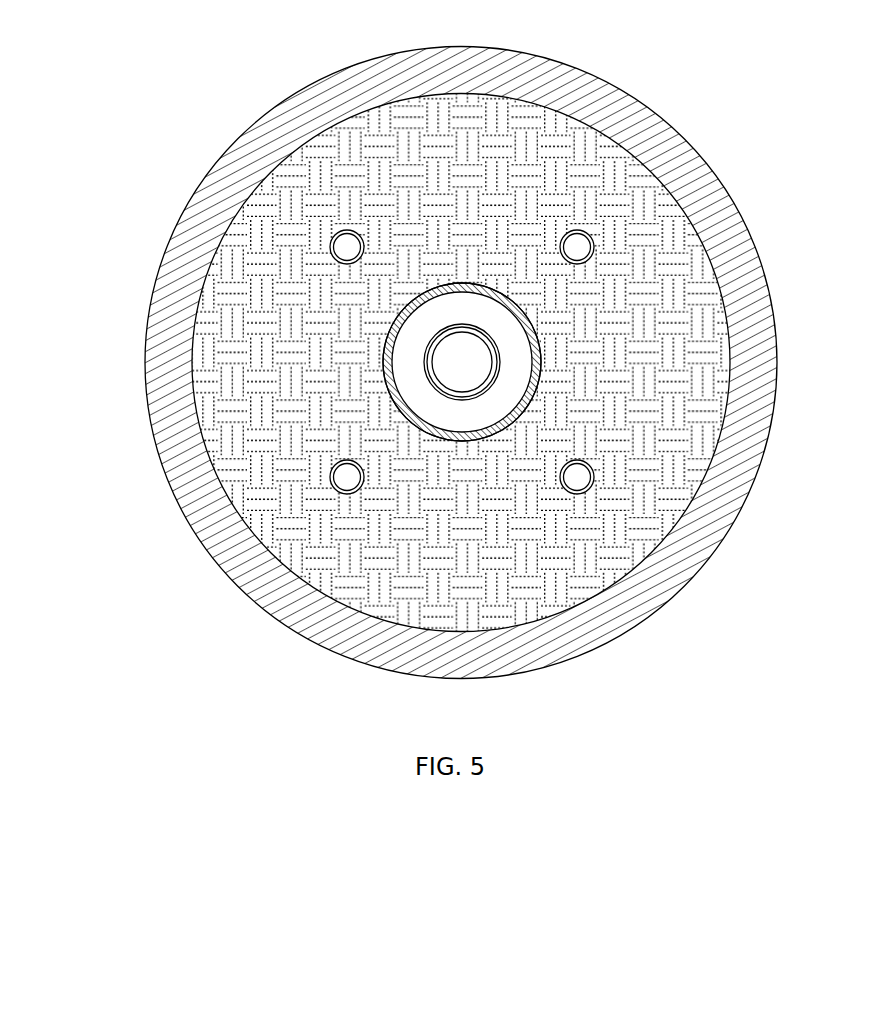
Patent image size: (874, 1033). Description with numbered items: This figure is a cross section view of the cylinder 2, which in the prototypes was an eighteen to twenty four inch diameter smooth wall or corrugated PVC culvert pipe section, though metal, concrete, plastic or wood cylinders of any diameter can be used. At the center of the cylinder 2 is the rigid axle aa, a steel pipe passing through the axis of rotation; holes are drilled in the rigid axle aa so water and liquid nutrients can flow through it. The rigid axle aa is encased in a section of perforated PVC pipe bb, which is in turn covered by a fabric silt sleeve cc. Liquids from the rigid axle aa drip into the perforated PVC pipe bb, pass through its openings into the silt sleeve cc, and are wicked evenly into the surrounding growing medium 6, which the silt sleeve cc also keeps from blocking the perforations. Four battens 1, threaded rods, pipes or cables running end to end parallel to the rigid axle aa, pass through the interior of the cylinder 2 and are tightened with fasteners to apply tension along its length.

The cylinder 2 is at (708, 88).
The batten 1 is at (712, 521).
The growing medium 6 is at (620, 272).
The rigid axle aa is at (500, 361).
The perforated PVC pipe bb is at (542, 373).
The fabric silt sleeve cc is at (545, 397).